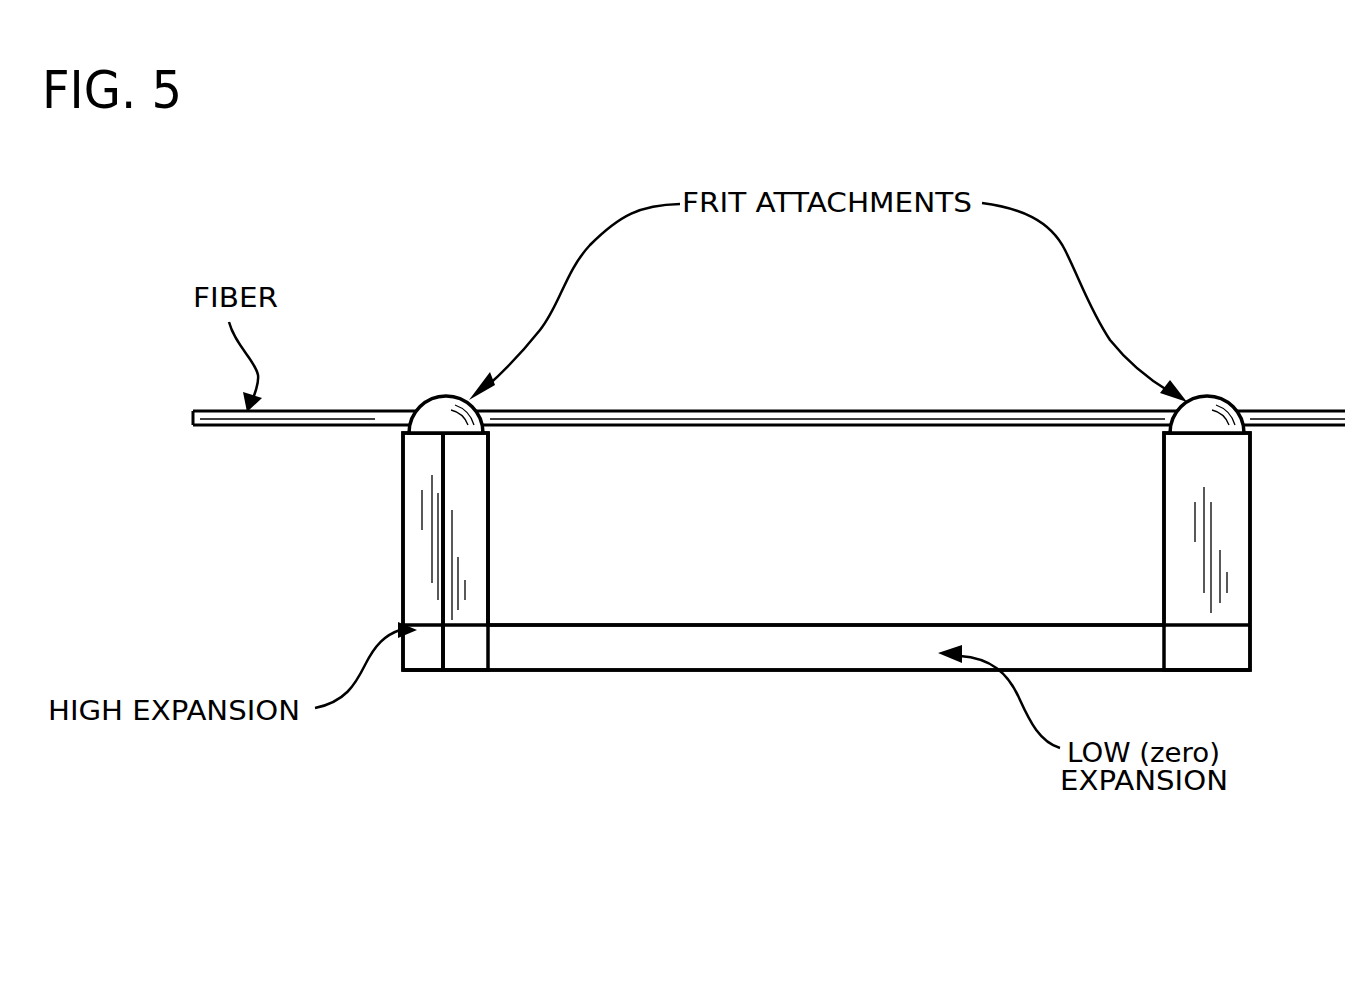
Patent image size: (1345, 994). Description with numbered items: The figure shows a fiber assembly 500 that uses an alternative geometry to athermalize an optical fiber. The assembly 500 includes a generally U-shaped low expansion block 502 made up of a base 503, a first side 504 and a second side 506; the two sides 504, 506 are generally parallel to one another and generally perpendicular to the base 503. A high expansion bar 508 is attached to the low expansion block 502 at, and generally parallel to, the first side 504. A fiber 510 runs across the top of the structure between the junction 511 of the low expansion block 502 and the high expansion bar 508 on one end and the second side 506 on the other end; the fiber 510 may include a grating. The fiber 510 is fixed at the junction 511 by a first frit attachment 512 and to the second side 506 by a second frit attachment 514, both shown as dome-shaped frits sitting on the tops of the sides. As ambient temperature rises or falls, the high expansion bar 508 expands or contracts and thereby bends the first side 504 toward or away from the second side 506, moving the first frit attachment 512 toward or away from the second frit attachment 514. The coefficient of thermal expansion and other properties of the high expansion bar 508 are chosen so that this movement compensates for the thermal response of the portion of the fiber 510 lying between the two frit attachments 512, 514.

The fiber assembly 500 is at (834, 750).
The low expansion block 502 is at (641, 670).
The base 503 is at (726, 623).
The first side 504 is at (490, 525).
The second side 506 is at (1163, 497).
The high expansion bar 508 is at (403, 558).
The fiber 510 is at (827, 411).
The junction 511 is at (443, 458).
The first frit attachment 512 is at (444, 396).
The second frit attachment 514 is at (1207, 397).